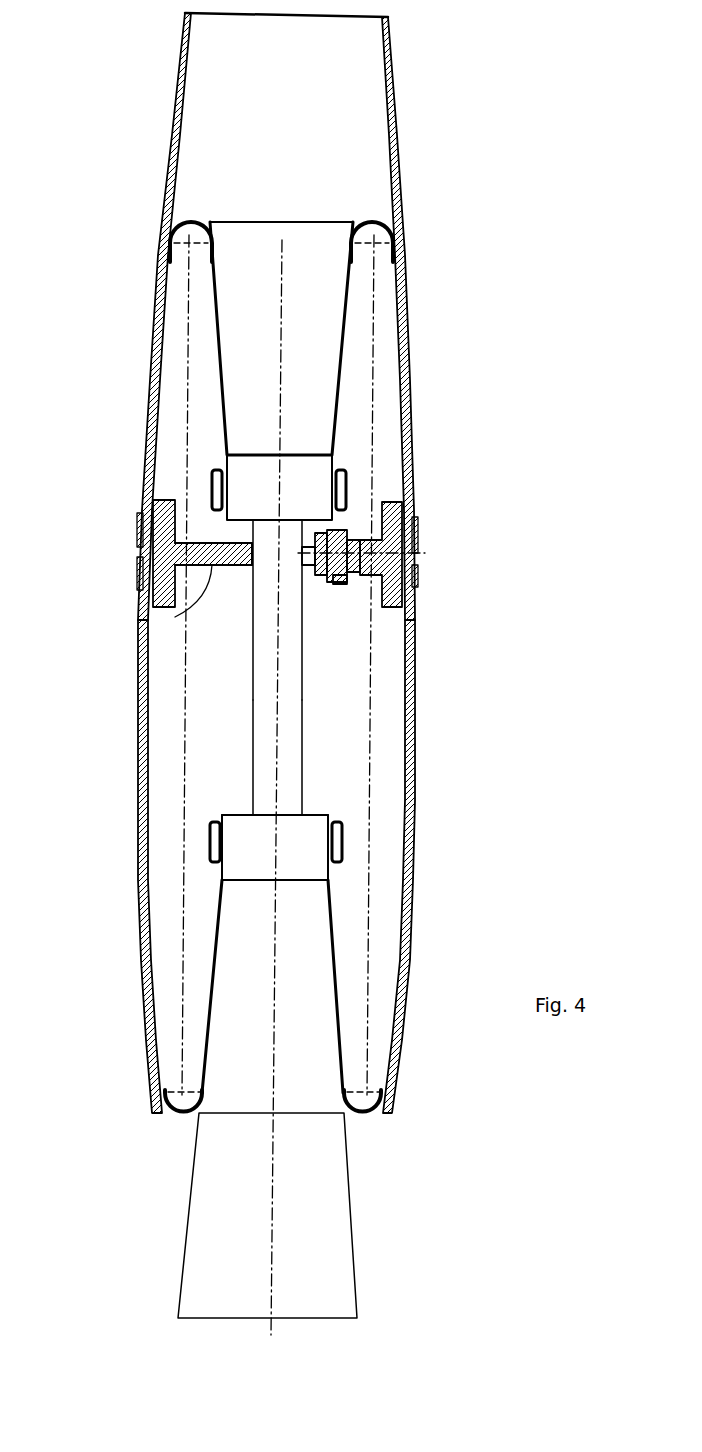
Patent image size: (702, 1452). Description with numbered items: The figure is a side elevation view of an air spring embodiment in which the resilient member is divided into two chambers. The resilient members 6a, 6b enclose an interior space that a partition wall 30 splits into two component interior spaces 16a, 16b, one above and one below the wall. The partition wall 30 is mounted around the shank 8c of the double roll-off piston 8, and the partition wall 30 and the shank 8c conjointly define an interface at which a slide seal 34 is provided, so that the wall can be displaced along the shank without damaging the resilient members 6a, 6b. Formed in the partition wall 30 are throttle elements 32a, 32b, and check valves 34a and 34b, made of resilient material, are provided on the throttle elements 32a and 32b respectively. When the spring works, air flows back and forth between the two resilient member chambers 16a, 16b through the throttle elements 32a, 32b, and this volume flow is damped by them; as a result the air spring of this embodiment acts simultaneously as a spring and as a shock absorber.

The resilient member 6a is at (157, 378).
The resilient member 6b is at (148, 840).
The double roll-off piston 8 is at (308, 681).
The shank 8c is at (290, 748).
The component interior space 16a is at (385, 328).
The component interior space 16b is at (385, 903).
The partition wall 30 is at (165, 617).
The throttle element 32a is at (327, 577).
The throttle element 32b is at (417, 495).
The slide seal 34 is at (302, 555).
The check valve 34a is at (347, 522).
The check valve 34b is at (357, 583).